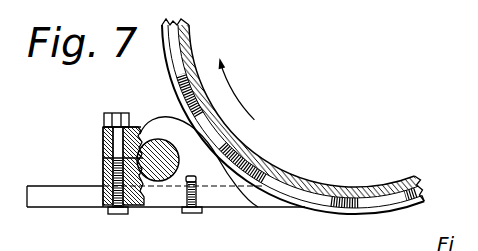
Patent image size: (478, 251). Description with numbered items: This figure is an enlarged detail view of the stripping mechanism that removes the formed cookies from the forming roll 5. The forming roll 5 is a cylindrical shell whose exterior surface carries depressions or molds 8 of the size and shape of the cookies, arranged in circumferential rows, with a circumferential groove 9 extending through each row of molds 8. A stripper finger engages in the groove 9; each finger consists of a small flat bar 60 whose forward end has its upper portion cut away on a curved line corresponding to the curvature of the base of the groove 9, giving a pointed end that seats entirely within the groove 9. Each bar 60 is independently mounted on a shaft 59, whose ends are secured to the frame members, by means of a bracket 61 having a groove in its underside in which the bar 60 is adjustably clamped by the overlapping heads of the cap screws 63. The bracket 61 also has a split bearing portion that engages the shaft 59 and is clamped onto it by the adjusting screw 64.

The forming roll 5 is at (312, 188).
The depressions or molds 8 is at (173, 93).
The circumferential groove 9 is at (185, 42).
The shaft 59 is at (153, 150).
The flat bar 60 is at (263, 197).
The bracket 61 is at (238, 148).
The cap screws 63 is at (113, 214).
The adjusting screw 64 is at (114, 113).